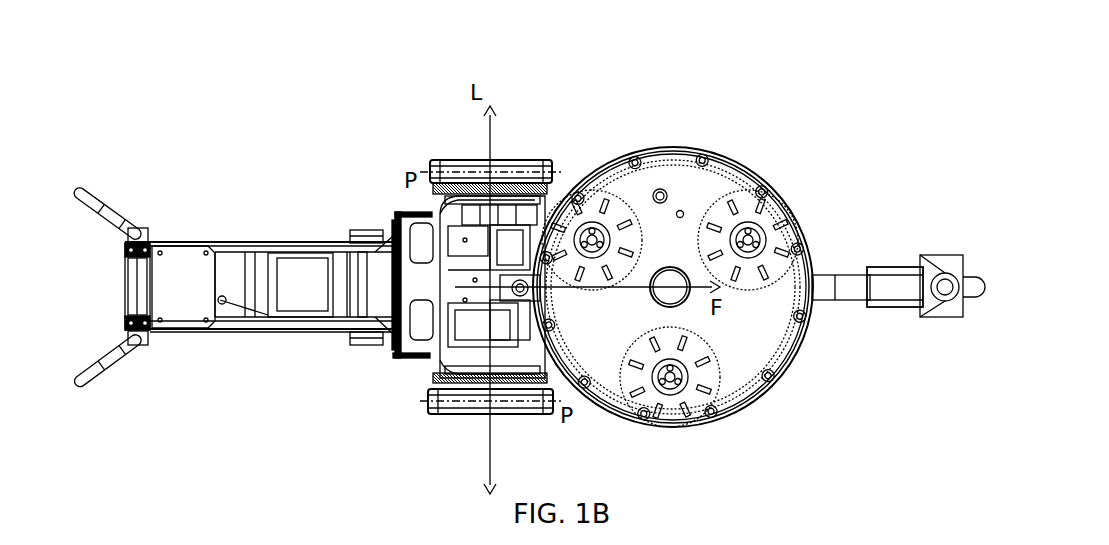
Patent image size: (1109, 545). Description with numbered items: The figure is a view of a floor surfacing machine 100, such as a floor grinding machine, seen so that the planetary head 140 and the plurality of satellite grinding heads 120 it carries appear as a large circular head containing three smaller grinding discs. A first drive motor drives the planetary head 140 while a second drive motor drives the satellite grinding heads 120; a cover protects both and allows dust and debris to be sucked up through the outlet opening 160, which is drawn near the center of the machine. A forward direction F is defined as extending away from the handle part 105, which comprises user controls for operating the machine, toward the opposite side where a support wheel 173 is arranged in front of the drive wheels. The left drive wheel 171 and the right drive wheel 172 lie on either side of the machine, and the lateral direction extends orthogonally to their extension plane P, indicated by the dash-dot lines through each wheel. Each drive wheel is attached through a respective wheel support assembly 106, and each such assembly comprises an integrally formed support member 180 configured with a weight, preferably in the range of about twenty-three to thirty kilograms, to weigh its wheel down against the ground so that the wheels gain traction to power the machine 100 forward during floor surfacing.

The floor surfacing machine 100 is at (802, 99).
The handle part 105 is at (247, 335).
The wheel support assembly 106 is at (392, 150).
The satellite grinding head 120 is at (590, 205).
The planetary head 140 is at (750, 347).
The outlet opening 160 is at (530, 293).
The left drive wheel 171 is at (482, 413).
The right drive wheel 172 is at (458, 162).
The support wheel 173 is at (975, 298).
The support member 180 is at (442, 205).